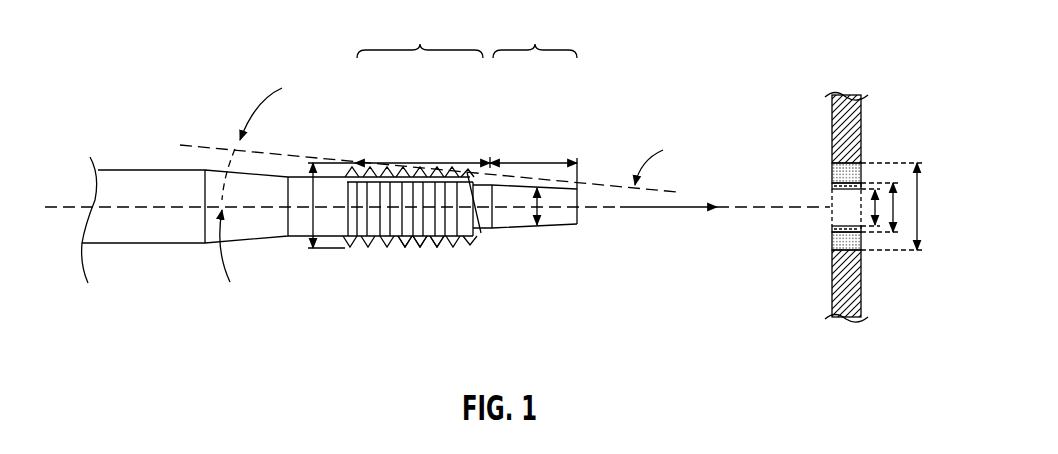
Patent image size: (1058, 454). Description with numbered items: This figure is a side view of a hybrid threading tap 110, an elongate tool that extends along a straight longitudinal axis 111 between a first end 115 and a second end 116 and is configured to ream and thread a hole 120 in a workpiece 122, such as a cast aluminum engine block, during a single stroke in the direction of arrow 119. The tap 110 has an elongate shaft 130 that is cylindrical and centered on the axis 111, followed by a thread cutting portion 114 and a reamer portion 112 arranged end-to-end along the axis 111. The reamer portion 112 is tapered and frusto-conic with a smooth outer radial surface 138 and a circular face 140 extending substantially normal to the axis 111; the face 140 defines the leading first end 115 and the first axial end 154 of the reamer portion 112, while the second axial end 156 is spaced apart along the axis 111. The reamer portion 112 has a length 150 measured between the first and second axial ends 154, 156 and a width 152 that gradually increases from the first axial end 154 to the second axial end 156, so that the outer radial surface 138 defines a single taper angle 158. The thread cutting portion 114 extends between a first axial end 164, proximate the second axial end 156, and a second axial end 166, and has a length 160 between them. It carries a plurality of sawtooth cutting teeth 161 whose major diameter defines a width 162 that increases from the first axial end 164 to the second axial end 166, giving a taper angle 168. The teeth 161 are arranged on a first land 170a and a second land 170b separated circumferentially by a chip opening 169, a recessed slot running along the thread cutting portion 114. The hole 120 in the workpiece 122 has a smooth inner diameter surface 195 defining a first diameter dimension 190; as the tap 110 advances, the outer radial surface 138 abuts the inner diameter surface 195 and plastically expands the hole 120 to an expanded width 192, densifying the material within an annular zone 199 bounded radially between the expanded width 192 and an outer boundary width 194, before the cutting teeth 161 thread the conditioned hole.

The hybrid threading tap 110 is at (153, 60).
The longitudinal axis 111 is at (90, 203).
The reamer portion 112 is at (535, 36).
The thread cutting portion 114 is at (415, 125).
The first end 115 is at (578, 187).
The second end 116 is at (108, 190).
The arrow 119 is at (693, 208).
The hole 120 is at (828, 195).
The workpiece 122 is at (860, 103).
The elongate shaft 130 is at (158, 227).
The outer radial surface 138 is at (525, 220).
The face 140 is at (578, 226).
The length 150 is at (533, 162).
The width 152 is at (530, 184).
The first axial end 154 is at (580, 192).
The second axial end 156 is at (482, 232).
The taper angle 158 is at (655, 158).
The length 160 is at (407, 173).
The cutting teeth 161 is at (437, 247).
The width 162 is at (310, 230).
The first axial end 164 is at (485, 180).
The second axial end 166 is at (347, 250).
The taper angle 168 is at (262, 122).
The chip opening 169 is at (355, 167).
The first land 170a is at (403, 236).
The second land 170b is at (437, 173).
The first diameter dimension 190 is at (865, 193).
The expanded width 192 is at (897, 225).
The outer boundary width 194 is at (920, 234).
The inner diameter surface 195 is at (842, 192).
The zone 199 is at (828, 232).